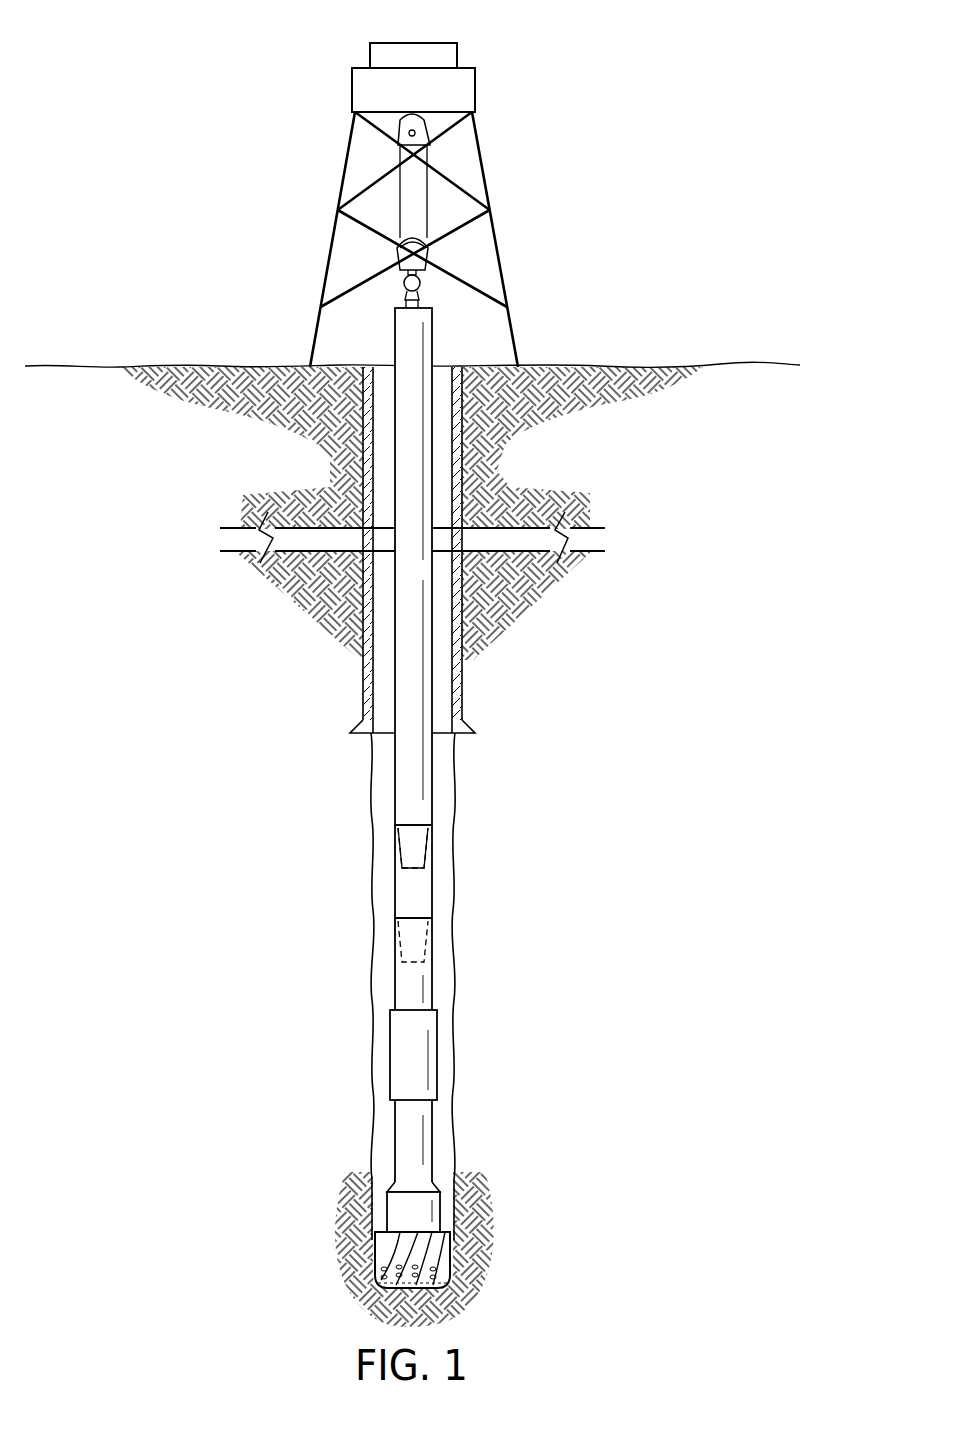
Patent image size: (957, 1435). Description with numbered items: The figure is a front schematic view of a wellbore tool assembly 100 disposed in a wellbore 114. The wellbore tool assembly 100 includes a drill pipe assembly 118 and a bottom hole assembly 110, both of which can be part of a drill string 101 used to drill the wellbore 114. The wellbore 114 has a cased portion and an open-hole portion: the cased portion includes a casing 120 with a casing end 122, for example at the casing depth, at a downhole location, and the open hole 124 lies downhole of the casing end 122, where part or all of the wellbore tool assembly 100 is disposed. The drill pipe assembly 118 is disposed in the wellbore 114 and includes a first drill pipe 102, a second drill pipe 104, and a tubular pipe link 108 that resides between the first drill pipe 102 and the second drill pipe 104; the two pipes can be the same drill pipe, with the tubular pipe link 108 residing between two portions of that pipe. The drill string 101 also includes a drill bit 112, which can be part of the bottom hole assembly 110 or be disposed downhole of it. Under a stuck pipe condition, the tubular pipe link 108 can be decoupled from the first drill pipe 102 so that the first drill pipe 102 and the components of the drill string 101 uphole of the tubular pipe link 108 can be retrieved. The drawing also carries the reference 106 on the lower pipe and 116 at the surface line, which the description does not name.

The wellbore tool assembly 100 is at (205, 64).
The drill string 101 is at (416, 798).
The first drill pipe 102 is at (395, 353).
The second drill pipe 104 is at (432, 988).
The lower drill pipe 106 is at (390, 1127).
The tubular pipe link 108 is at (432, 882).
The bottom hole assembly 110 is at (390, 1055).
The drill bit 112 is at (432, 1237).
The wellbore 114 is at (163, 474).
The ground surface 116 is at (648, 366).
The drill pipe assembly 118 is at (384, 880).
The casing 120 is at (457, 622).
The casing end 122 is at (360, 732).
The open hole 124 is at (385, 965).